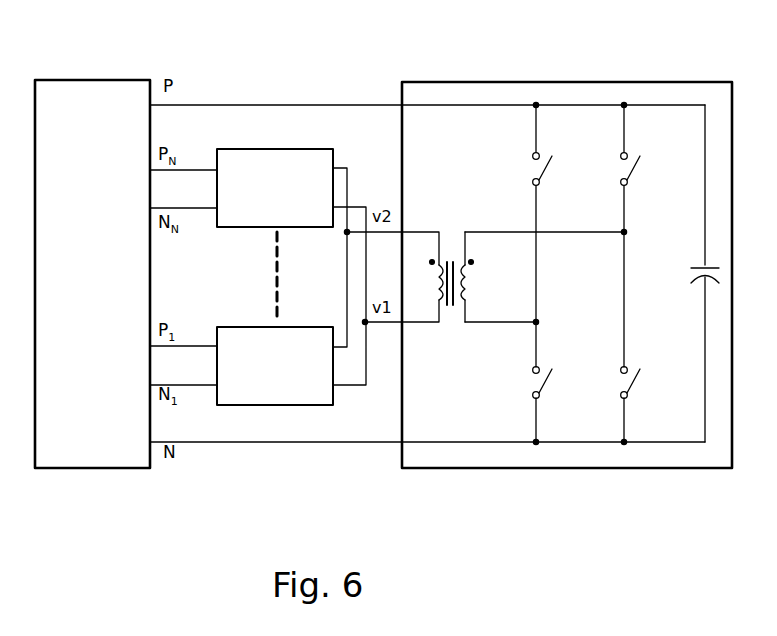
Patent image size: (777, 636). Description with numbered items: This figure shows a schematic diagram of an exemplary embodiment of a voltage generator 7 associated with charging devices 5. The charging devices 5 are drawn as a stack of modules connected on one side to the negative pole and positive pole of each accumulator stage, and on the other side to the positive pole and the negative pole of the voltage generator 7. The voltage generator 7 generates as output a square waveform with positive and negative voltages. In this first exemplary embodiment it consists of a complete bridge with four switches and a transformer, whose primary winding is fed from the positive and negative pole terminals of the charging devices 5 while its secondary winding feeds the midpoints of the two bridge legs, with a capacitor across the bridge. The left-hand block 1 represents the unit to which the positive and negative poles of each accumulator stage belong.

The photovoltaic source / DC source unit 1 is at (97, 80).
The charging device 5 is at (247, 149).
The voltage generator 7 is at (432, 82).